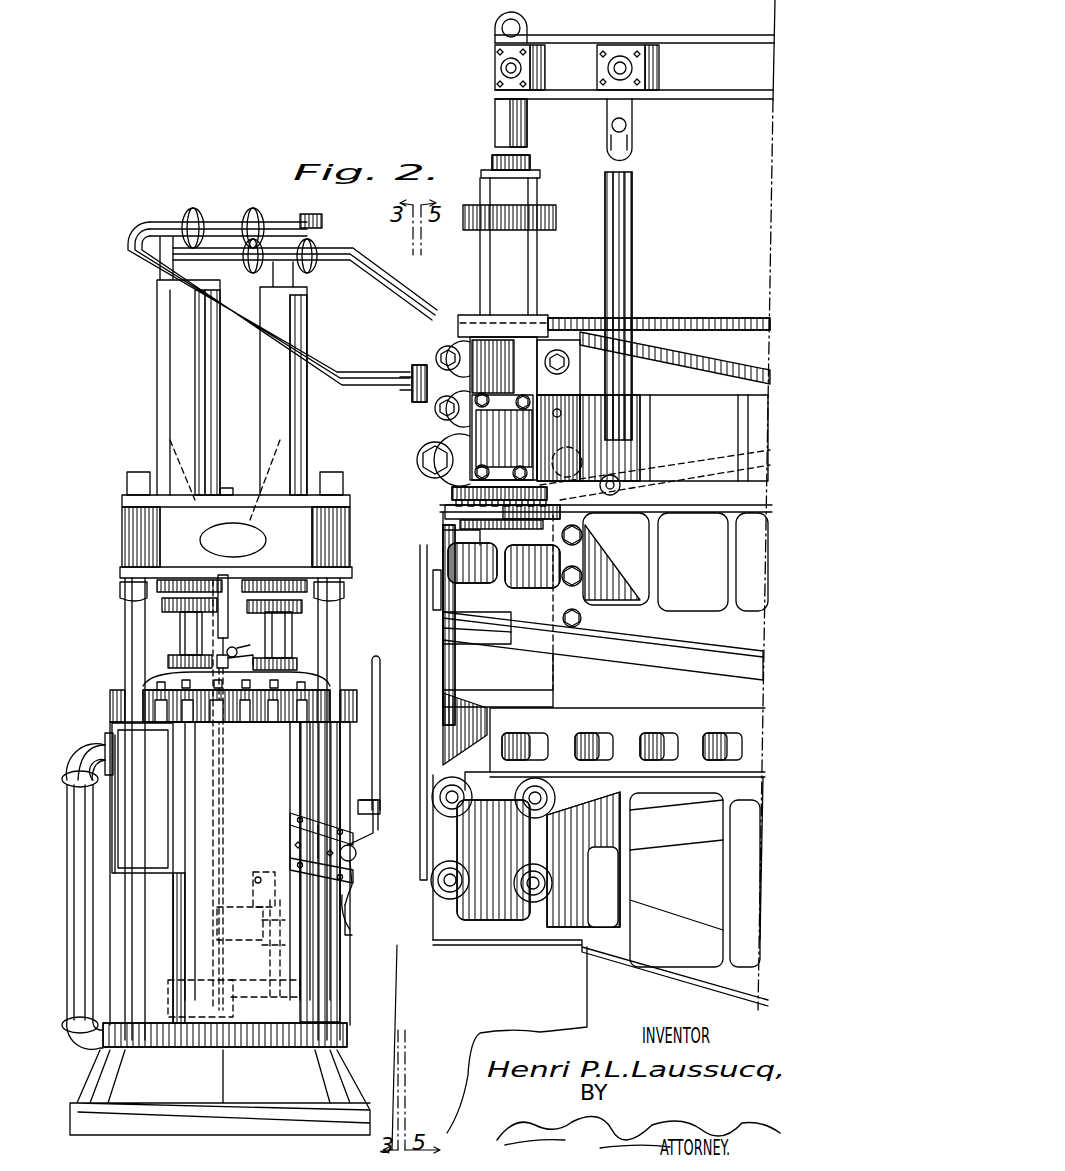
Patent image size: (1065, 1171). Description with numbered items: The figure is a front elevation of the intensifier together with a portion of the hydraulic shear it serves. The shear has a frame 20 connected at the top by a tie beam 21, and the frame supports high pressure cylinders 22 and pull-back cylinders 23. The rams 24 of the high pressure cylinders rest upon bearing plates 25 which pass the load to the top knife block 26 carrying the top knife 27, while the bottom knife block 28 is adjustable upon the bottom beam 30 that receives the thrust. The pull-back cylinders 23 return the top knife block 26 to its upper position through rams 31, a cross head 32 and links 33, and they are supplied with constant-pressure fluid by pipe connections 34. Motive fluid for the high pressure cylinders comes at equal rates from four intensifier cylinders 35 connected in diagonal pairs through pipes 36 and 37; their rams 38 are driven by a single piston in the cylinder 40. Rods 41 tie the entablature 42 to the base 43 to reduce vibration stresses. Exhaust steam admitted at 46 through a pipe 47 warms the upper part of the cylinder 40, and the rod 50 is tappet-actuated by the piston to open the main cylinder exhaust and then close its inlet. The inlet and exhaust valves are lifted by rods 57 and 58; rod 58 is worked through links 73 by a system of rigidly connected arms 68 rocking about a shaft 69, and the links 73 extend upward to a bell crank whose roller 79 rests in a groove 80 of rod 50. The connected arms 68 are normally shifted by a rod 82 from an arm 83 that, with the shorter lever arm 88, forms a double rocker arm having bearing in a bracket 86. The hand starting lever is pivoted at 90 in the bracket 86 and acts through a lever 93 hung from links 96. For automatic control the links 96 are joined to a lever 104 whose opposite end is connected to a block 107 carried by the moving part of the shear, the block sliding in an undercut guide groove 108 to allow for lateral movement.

The frame 20 is at (556, 688).
The tie beam 21 is at (653, 420).
The high pressure cylinders 22 is at (512, 360).
The pull-back cylinders 23 is at (512, 255).
The rams 24 is at (455, 492).
The bearing plates 25 is at (450, 516).
The top knife block 26 is at (606, 602).
The top knife 27 is at (630, 668).
The bottom knife block 28 is at (678, 718).
The bottom beam 30 is at (599, 890).
The rams 31 is at (500, 121).
The cross head 32 is at (711, 88).
The links 33 is at (620, 214).
The pipe connections 34 is at (745, 318).
The high pressure intensifier cylinders 35 is at (180, 408).
The pipes 36 is at (668, 340).
The pipes 37 is at (332, 372).
The rams 38 is at (185, 630).
The cylinder 40 is at (170, 905).
The rods 41 is at (135, 660).
The entablature 42 is at (172, 531).
The base 43 is at (190, 1085).
The exhaust steam inlet 46 is at (105, 737).
The pipe 47 is at (75, 928).
The rod 50 is at (226, 622).
The rod 57 is at (280, 962).
The rod 58 is at (215, 955).
The system of rigidly connected arms 68 is at (240, 924).
The shaft 69 is at (372, 665).
The links 73 is at (213, 830).
The roller 79 is at (245, 648).
The groove 80 is at (240, 648).
The rod 82 is at (256, 879).
The arm 83 is at (350, 938).
The bracket 86 is at (298, 853).
The lever arm 88 is at (350, 910).
The pivot 90 is at (372, 842).
The lever 93 is at (358, 884).
The links 96 is at (420, 775).
The lever 104 is at (436, 575).
The block 107 is at (445, 549).
The undercut guide groove 108 is at (455, 560).